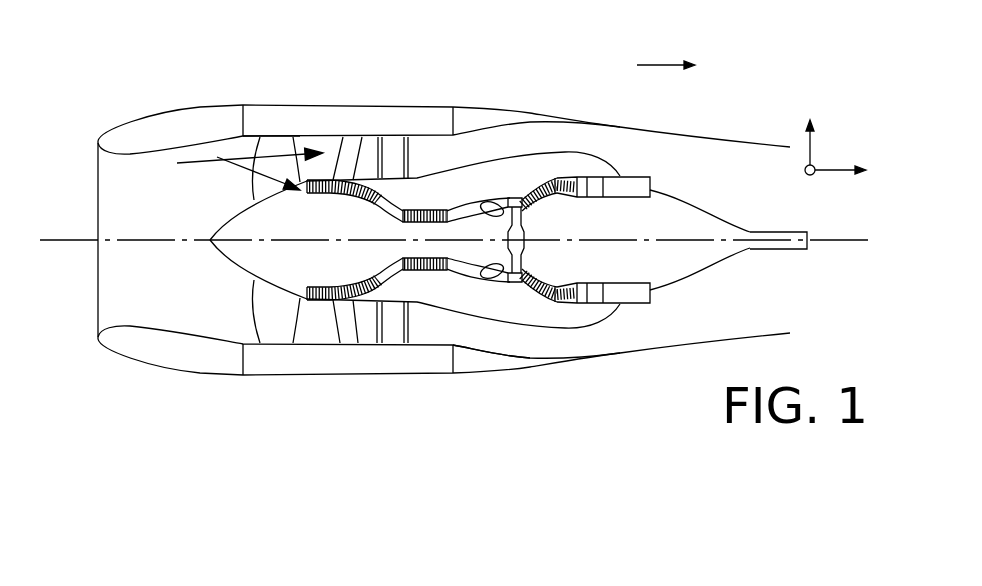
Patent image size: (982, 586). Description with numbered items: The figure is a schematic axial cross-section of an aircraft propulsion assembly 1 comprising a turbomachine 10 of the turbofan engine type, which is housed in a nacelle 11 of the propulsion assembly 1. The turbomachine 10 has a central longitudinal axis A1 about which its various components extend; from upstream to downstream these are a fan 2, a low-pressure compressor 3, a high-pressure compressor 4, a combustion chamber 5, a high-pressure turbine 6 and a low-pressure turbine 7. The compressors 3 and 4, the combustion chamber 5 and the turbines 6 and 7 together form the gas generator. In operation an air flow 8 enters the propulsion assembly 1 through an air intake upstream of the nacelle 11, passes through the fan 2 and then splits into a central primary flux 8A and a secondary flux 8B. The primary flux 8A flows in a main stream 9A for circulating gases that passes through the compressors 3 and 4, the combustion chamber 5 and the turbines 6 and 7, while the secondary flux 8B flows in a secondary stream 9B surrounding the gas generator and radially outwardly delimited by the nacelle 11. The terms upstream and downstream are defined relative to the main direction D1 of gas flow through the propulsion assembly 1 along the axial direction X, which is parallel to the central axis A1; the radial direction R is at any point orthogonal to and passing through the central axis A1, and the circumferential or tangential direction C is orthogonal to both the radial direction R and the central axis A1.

The aircraft propulsion assembly 1 is at (247, 70).
The fan 2 is at (262, 302).
The low-pressure compressor 3 is at (340, 178).
The high-pressure compressor 4 is at (437, 199).
The combustion chamber 5 is at (490, 202).
The high-pressure turbine 6 is at (527, 177).
The low-pressure turbine 7 is at (581, 164).
The air flow 8 is at (193, 160).
The primary flux 8A is at (268, 178).
The secondary flux 8B is at (274, 137).
The main stream 9A is at (398, 273).
The secondary stream 9B is at (503, 337).
The turbomachine 10 is at (677, 166).
The nacelle 11 is at (358, 113).
The central longitudinal axis A1 is at (45, 240).
The main direction of gas flow D1 is at (660, 64).
The radial direction R is at (808, 129).
The axial direction X is at (850, 170).
The circumferential direction C is at (836, 149).